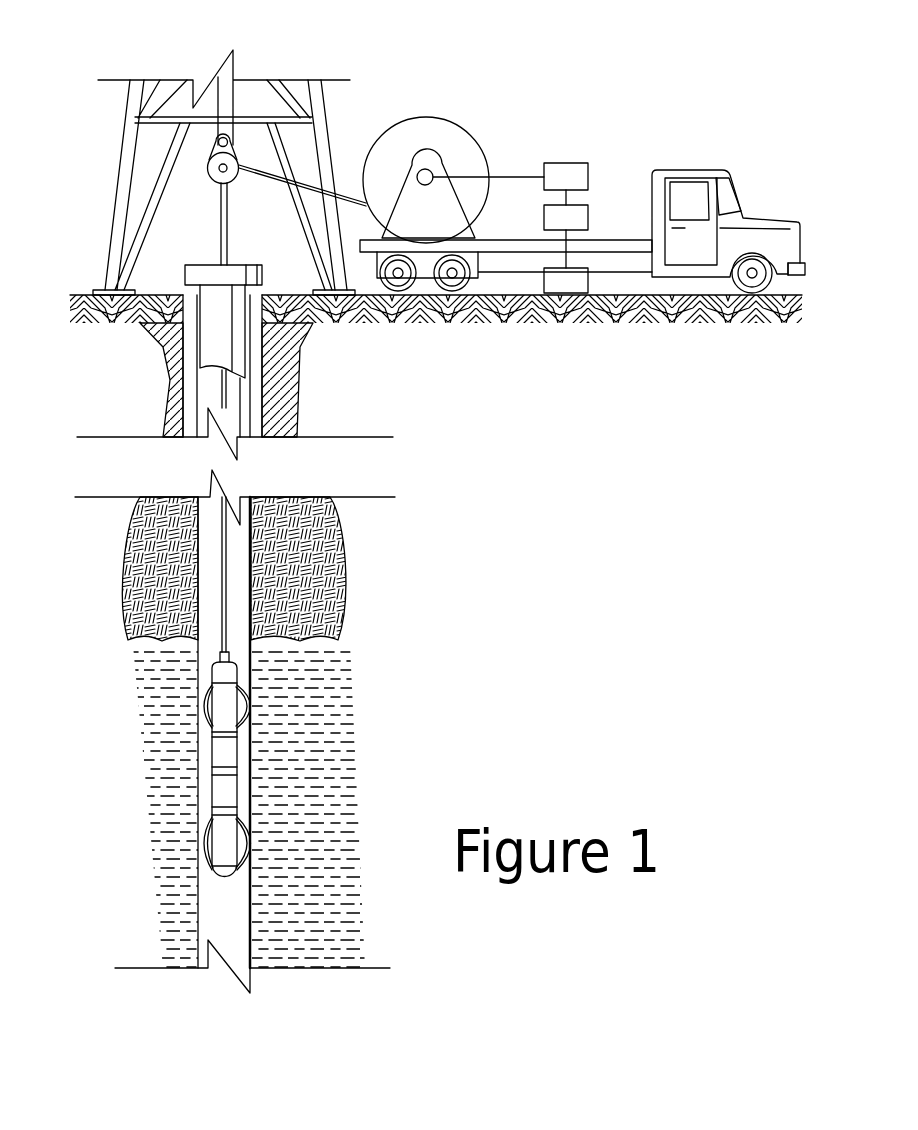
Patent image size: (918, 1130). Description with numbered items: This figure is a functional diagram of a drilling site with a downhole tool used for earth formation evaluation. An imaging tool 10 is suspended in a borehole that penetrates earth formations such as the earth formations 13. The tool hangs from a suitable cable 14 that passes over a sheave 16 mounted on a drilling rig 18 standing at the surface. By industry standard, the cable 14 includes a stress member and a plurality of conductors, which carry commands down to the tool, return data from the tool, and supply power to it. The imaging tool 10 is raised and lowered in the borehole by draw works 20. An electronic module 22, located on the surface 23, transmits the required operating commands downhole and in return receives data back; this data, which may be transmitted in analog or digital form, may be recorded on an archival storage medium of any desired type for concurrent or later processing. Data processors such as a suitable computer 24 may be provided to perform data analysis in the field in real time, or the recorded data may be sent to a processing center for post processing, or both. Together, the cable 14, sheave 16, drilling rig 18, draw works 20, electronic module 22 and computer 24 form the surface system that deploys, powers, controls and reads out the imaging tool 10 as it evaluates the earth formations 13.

The imaging tool 10 is at (240, 757).
The earth formations 13 is at (371, 603).
The cable 14 is at (220, 240).
The sheave 16 is at (207, 170).
The drilling rig 18 is at (127, 123).
The draw works 20 is at (426, 117).
The electronic module 22 is at (568, 163).
The surface 23 is at (84, 294).
The computer 24 is at (583, 206).